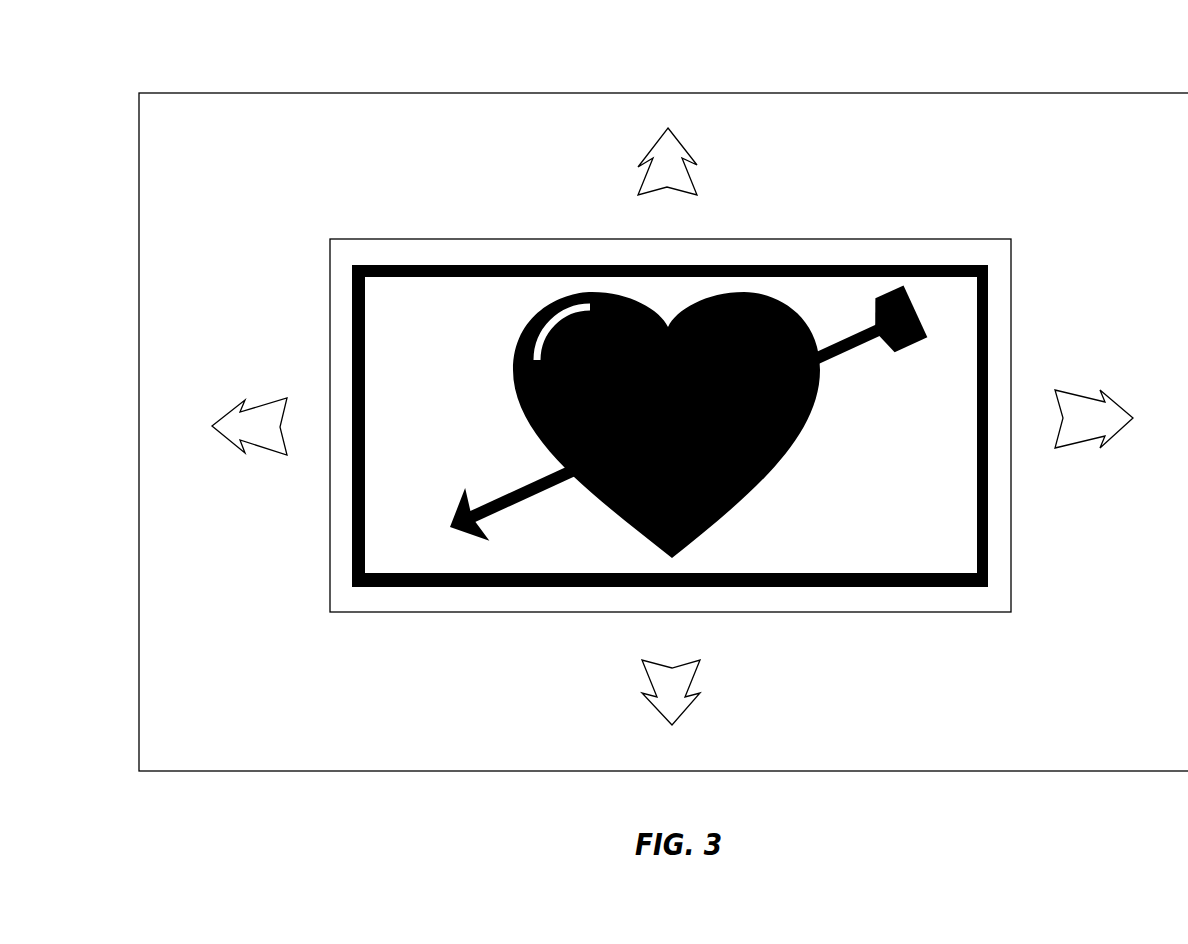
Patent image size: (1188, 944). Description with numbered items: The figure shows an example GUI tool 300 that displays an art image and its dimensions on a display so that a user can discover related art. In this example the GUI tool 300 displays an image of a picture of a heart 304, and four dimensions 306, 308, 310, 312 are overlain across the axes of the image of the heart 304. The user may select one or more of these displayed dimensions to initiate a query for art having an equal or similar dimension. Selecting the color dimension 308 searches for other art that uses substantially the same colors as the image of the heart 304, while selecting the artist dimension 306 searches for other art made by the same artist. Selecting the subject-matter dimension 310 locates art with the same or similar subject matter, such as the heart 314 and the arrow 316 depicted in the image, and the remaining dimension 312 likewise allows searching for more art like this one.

The GUI tool 300 is at (190, 83).
The image of a picture of a heart 304 is at (978, 243).
The artist dimension 306 is at (705, 705).
The color dimension 308 is at (212, 407).
The subject-matter dimension 310 is at (1112, 382).
The dimension 312 is at (688, 143).
The heart 314 is at (808, 423).
The arrow 316 is at (905, 318).